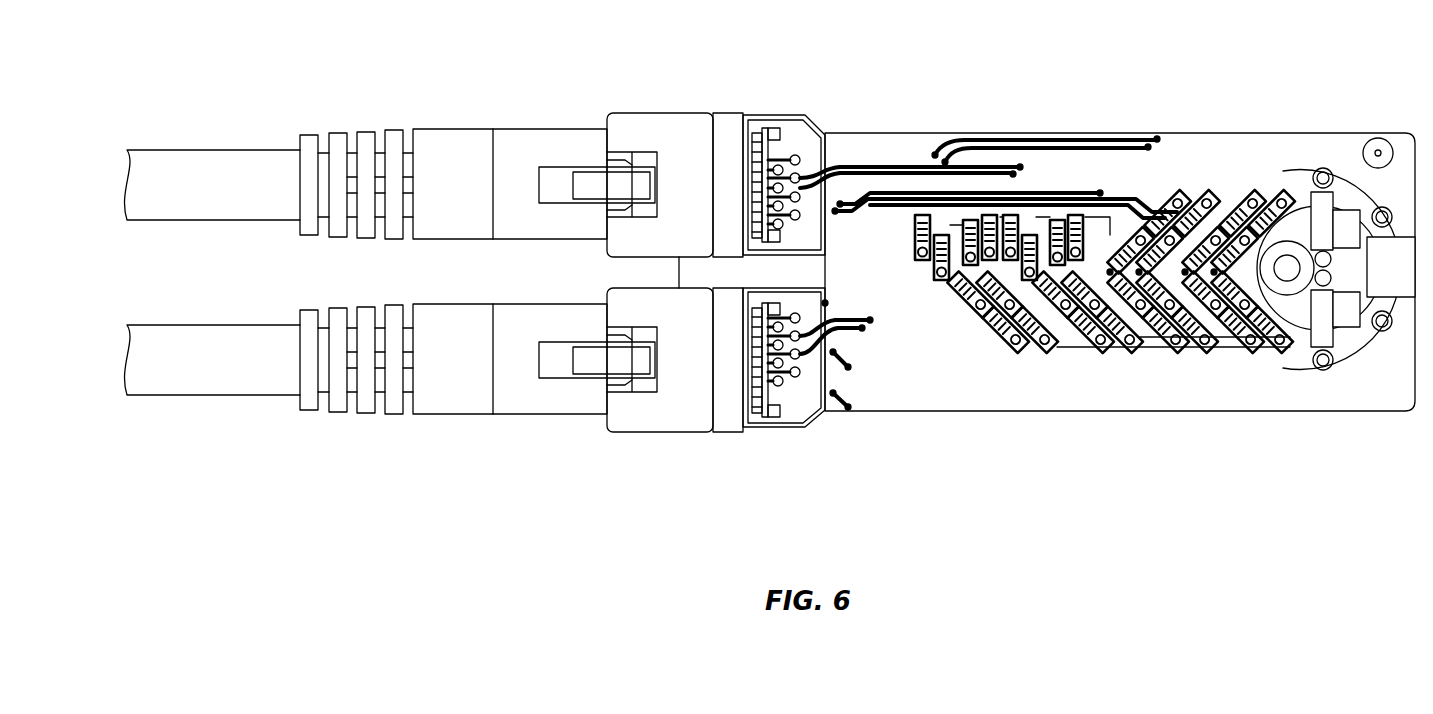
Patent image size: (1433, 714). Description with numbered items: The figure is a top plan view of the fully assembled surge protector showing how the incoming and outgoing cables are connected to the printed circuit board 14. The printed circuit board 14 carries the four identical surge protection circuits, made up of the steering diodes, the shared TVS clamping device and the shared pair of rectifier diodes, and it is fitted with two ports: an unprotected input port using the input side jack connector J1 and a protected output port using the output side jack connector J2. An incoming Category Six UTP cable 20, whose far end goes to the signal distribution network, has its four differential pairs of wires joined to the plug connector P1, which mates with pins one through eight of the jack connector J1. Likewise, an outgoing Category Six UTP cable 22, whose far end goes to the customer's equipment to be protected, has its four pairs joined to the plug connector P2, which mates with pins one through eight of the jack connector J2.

The incoming Category 6 UTP cable 20 is at (208, 150).
The outgoing Category 6 UTP cable 22 is at (207, 395).
The RJ-45 plug connector P1 is at (538, 128).
The RJ-45 plug connector P2 is at (537, 420).
The input side RJ-45 jack connector J1 is at (686, 112).
The output side RJ-45 jack connector J2 is at (686, 434).
The printed circuit board 14 is at (1210, 133).